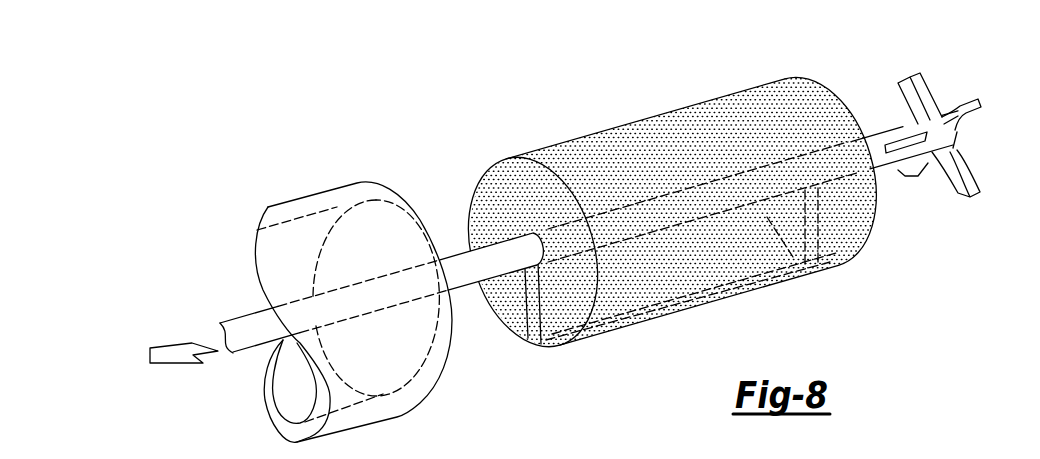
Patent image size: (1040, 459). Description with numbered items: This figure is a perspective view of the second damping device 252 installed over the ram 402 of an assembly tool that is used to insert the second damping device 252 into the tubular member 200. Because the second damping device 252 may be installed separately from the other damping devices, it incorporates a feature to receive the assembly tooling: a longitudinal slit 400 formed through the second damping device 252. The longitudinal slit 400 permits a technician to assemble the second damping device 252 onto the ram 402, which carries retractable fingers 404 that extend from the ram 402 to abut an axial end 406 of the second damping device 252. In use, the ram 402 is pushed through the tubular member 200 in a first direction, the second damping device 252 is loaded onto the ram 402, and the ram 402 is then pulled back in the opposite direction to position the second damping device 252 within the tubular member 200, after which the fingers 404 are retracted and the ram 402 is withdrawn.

The tubular member 200 is at (322, 196).
The second damping device 252 is at (620, 133).
The longitudinal slit 400 is at (533, 330).
The ram 402 is at (459, 255).
The retractable fingers 404 is at (927, 105).
The axial end 406 is at (828, 90).